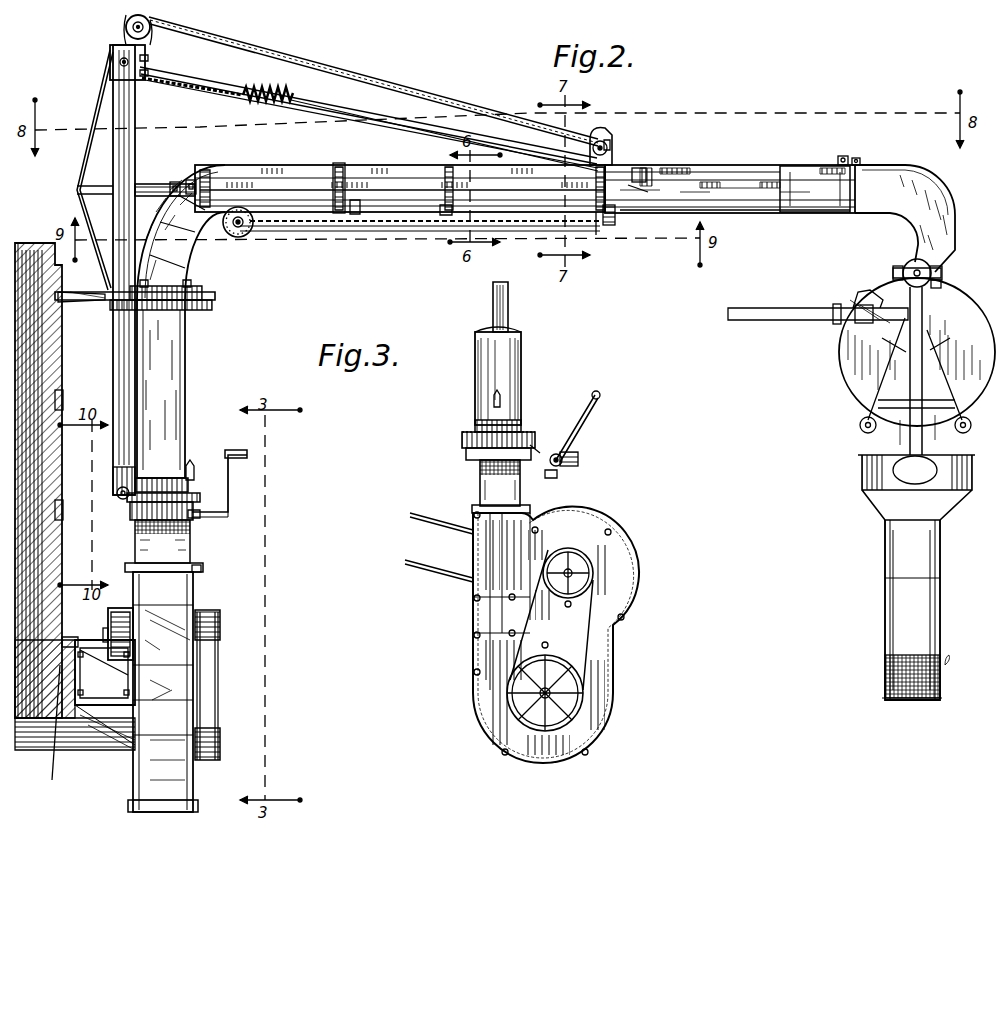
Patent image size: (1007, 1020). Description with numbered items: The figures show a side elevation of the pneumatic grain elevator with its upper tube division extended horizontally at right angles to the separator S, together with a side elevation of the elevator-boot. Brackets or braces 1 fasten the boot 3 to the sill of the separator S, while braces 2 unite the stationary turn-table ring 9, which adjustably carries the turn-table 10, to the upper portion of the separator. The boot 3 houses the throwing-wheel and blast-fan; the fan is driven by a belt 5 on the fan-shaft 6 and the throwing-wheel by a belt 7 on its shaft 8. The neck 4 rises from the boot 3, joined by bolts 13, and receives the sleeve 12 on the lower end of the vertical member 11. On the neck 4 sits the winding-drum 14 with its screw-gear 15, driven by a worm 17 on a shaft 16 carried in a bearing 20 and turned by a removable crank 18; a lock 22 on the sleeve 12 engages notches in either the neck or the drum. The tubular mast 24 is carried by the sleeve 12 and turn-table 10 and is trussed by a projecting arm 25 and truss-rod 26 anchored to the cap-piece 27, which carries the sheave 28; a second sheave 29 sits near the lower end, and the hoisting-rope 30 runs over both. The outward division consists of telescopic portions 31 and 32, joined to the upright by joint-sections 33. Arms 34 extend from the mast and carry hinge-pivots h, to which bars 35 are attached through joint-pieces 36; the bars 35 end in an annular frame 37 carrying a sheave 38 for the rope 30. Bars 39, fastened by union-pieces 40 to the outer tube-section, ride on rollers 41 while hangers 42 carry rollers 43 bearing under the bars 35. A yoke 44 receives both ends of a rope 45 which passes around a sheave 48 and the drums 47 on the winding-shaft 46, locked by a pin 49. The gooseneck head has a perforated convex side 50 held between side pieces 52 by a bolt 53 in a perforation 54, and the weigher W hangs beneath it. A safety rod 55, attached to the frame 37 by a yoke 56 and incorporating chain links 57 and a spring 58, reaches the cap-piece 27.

In FIG. 2, the brackets or braces 1 is at (118, 668).
In FIG. 2, the brackets or braces 2 is at (80, 302).
In FIG. 2, the boot 3 is at (105, 783).
In FIG. 3, the boot 3 is at (625, 553).
In FIG. 2, the neck 4 is at (164, 546).
In FIG. 3, the neck 4 is at (525, 490).
In FIG. 2, the belt 5 is at (120, 610).
In FIG. 3, the belt 5 is at (432, 516).
In FIG. 2, the fan-shaft 6 is at (222, 632).
In FIG. 3, the fan-shaft 6 is at (595, 575).
In FIG. 2, the belt 7 is at (210, 683).
In FIG. 3, the belt 7 is at (592, 647).
In FIG. 2, the throwing-wheel shaft 8 is at (222, 752).
In FIG. 3, the throwing-wheel shaft 8 is at (582, 720).
In FIG. 2, the stationary circular turn-table ring or frame 9 is at (205, 305).
In FIG. 2, the turn-table 10 is at (210, 298).
In FIG. 2, the vertical member 11 is at (177, 383).
In FIG. 3, the vertical member 11 is at (522, 363).
In FIG. 2, the sleeve 12 is at (155, 478).
In FIG. 3, the sleeve 12 is at (475, 425).
In FIG. 2, the bolts 13 is at (202, 572).
In FIG. 2, the winding drum or cylinder 14 is at (135, 503).
In FIG. 3, the winding drum or cylinder 14 is at (465, 443).
In FIG. 2, the screw-gear 15 is at (142, 518).
In FIG. 3, the screw-gear 15 is at (470, 458).
In FIG. 2, the shaft 16 is at (206, 520).
In FIG. 3, the worm 17 is at (580, 468).
In FIG. 2, the crank 18 is at (230, 487).
In FIG. 3, the crank 18 is at (580, 420).
In FIG. 3, the bearing 20 is at (576, 457).
In FIG. 2, the lock 22 is at (202, 470).
In FIG. 3, the lock 22 is at (495, 405).
In FIG. 2, the tubular mast 24 is at (135, 152).
In FIG. 2, the projecting arm 25 is at (98, 186).
In FIG. 2, the truss-rod 26 is at (80, 148).
In FIG. 2, the cap-piece 27 is at (110, 70).
In FIG. 2, the sheave 28 is at (150, 33).
In FIG. 2, the sheave 29 is at (118, 497).
In FIG. 2, the hoisting-rope 30 is at (322, 64).
In FIG. 3, the hoisting-rope 30 is at (536, 448).
In FIG. 2, the telescopic portion 31 is at (300, 165).
In FIG. 2, the telescopic portion 32 is at (750, 214).
In FIG. 2, the joint-sections 33 is at (215, 168).
In FIG. 2, the arms 34 is at (148, 184).
In FIG. 2, the bars 35 is at (262, 190).
In FIG. 2, the joint-pieces 36 is at (188, 182).
In FIG. 2, the annular frame 37 is at (616, 224).
In FIG. 2, the sheave 38 is at (588, 135).
In FIG. 2, the bars 39 is at (715, 168).
In FIG. 2, the union-pieces 40 is at (806, 168).
In FIG. 2, the rollers 41 is at (652, 178).
In FIG. 2, the hangers 42 is at (342, 165).
In FIG. 2, the rollers 43 is at (355, 214).
In FIG. 2, the cross-bar or yoke 44 is at (448, 215).
In FIG. 2, the rope 45 is at (302, 232).
In FIG. 2, the winding-shaft 46 is at (246, 230).
In FIG. 2, the sheaves or drums 47 is at (258, 222).
In FIG. 2, the sheave 48 is at (600, 232).
In FIG. 2, the pin 49 is at (233, 228).
In FIG. 2, the outer or convex side 50 is at (952, 193).
In FIG. 2, the side pieces 52 is at (917, 238).
In FIG. 2, the bolt 53 is at (845, 156).
In FIG. 2, the perforation 54 is at (858, 158).
In FIG. 2, the rod 55 is at (385, 118).
In FIG. 2, the yoke 56 is at (615, 160).
In FIG. 2, the links of a chain 57 is at (205, 91).
In FIG. 2, the spring 58 is at (272, 104).
In FIG. 2, the hinge-pivots h is at (159, 175).
In FIG. 2, the separator S is at (55, 368).
In FIG. 2, the weigher W is at (852, 357).